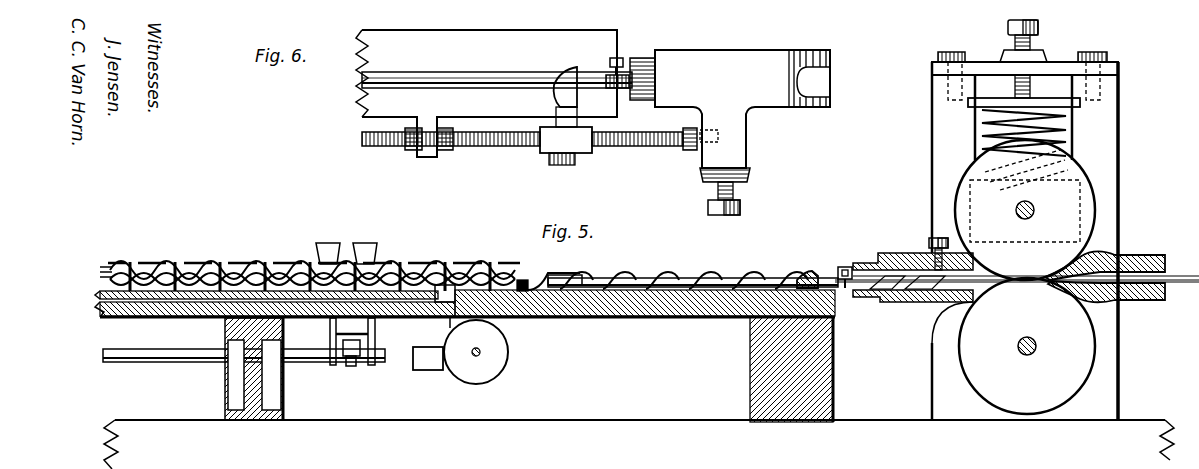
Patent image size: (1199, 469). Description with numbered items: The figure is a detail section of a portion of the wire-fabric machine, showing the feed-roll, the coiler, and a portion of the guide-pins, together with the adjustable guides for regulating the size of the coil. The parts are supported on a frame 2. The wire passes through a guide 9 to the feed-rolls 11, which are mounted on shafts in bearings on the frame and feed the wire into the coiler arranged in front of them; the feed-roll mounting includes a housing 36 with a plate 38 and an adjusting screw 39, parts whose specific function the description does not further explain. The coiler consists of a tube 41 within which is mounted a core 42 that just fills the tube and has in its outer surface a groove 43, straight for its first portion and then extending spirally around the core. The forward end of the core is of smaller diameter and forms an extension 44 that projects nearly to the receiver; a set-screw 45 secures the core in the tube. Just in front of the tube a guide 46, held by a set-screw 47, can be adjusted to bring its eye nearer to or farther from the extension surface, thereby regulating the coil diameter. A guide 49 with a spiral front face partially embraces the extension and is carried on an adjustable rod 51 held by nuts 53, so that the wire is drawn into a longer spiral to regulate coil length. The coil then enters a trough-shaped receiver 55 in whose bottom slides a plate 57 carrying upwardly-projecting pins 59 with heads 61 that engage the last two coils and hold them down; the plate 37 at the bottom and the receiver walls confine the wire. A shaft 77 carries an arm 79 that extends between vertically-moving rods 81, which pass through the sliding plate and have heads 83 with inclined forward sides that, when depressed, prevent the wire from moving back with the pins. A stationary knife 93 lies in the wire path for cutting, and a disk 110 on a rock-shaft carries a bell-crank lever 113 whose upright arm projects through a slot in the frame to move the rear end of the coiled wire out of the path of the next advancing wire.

In FIG. 5, the frame 2 is at (600, 432).
In FIG. 5, the guide 9 is at (1132, 257).
In FIG. 5, the feed-rolls 11 is at (1025, 277).
In FIG. 5, the roll housing 36 is at (1118, 152).
In FIG. 5, the plate 37 is at (980, 140).
In FIG. 5, the follower plate 38 is at (975, 103).
In FIG. 5, the adjusting screw 39 is at (1038, 28).
In FIG. 6, the tube 41 is at (700, 58).
In FIG. 5, the tube 41 is at (888, 303).
In FIG. 5, the core 42 is at (935, 300).
In FIG. 5, the groove 43 is at (933, 258).
In FIG. 6, the extension 44 is at (466, 74).
In FIG. 5, the extension 44 is at (740, 277).
In FIG. 5, the set-screw 45 is at (938, 238).
In FIG. 6, the guide 46 is at (617, 90).
In FIG. 5, the guide 46 is at (845, 267).
In FIG. 6, the set-screw 47 is at (620, 60).
In FIG. 6, the guide 49 is at (560, 95).
In FIG. 5, the guide 49 is at (810, 272).
In FIG. 6, the adjustable rod 51 is at (626, 144).
In FIG. 6, the nuts 53 is at (410, 150).
In FIG. 5, the trough-shaped receiver 55 is at (168, 318).
In FIG. 5, the sliding plate 57 is at (98, 295).
In FIG. 5, the pins 59 is at (236, 268).
In FIG. 5, the heads 61 is at (130, 266).
In FIG. 5, the shaft 77 is at (172, 362).
In FIG. 5, the arm 79 is at (350, 366).
In FIG. 5, the vertically-moving rods 81 is at (330, 328).
In FIG. 5, the heads 83 is at (332, 246).
In FIG. 5, the stationary knife 93 is at (546, 284).
In FIG. 5, the disk 110 is at (467, 380).
In FIG. 5, the bell-crank lever 113 is at (422, 370).